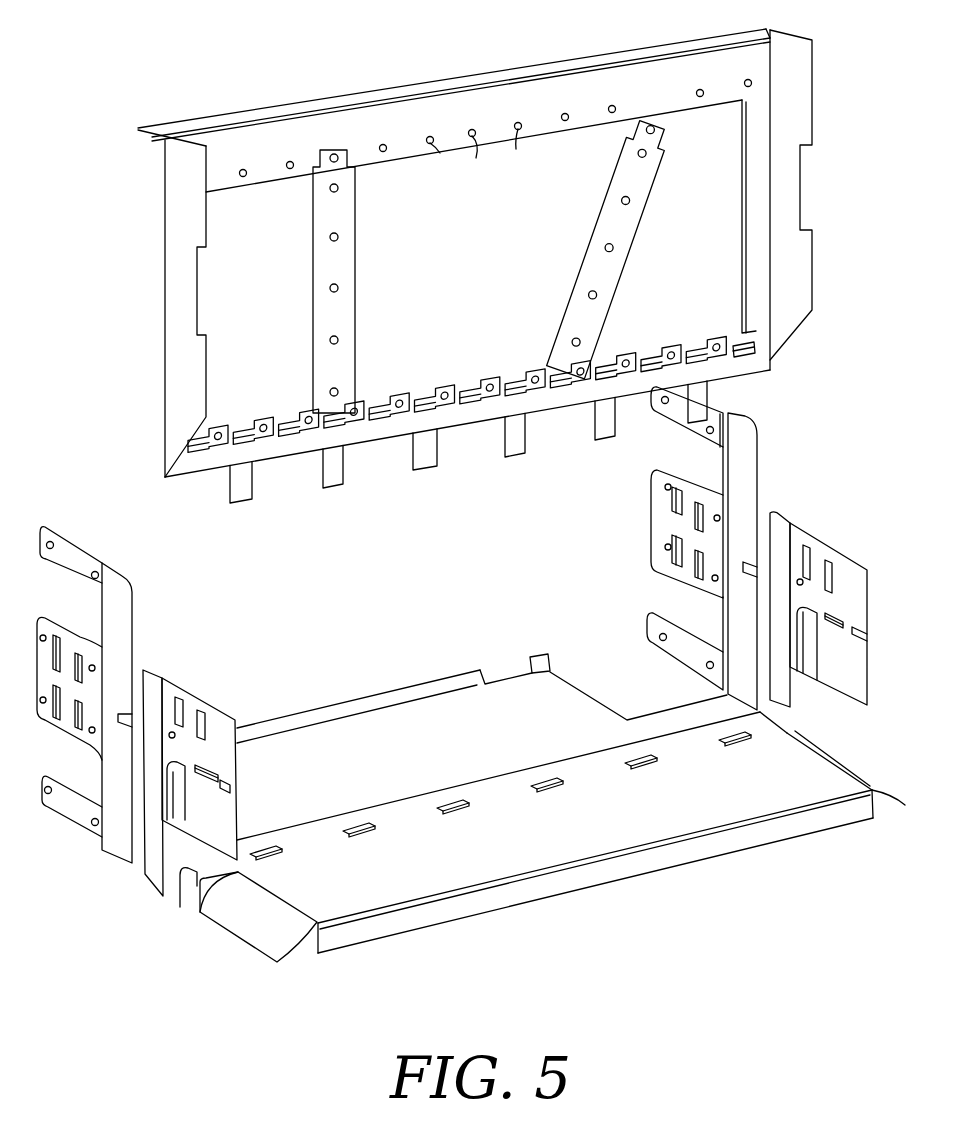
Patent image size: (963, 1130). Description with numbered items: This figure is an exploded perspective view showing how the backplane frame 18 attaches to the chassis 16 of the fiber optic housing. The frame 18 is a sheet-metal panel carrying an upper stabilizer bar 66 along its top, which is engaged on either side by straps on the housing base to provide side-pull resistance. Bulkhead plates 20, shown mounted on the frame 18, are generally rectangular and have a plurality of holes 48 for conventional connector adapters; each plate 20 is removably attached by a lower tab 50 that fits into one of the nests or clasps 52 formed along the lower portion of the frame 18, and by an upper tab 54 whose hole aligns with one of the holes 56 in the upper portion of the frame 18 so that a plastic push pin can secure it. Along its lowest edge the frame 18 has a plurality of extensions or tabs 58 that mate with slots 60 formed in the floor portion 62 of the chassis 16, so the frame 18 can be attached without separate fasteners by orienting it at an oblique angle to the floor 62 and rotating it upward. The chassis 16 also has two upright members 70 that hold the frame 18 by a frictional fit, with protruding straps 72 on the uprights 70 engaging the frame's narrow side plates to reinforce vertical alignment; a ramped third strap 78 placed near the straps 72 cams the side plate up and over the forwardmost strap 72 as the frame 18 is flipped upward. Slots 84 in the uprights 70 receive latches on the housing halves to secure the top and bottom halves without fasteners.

The chassis 16 is at (120, 842).
The backplane frame 18 is at (280, 142).
The bulkhead plates 20 is at (362, 203).
The holes 48 is at (337, 277).
The lower tab 50 is at (317, 412).
The nests or clasps 52 is at (377, 402).
The upper tab 54 is at (332, 147).
The holes 56 is at (515, 132).
The extensions or tabs 58 is at (318, 478).
The slots 60 is at (353, 823).
The floor portion 62 is at (592, 838).
The upper stabilizer bar 66 is at (138, 132).
The upright members 70 is at (188, 690).
The protruding straps 72 is at (827, 560).
The third strap 78 is at (828, 622).
The slots 84 is at (230, 788).